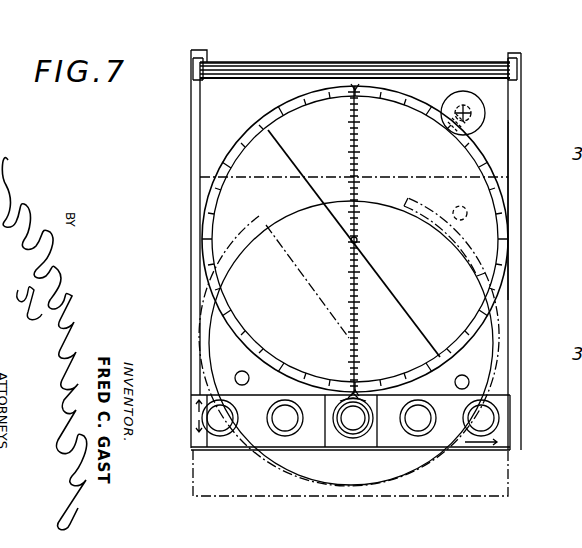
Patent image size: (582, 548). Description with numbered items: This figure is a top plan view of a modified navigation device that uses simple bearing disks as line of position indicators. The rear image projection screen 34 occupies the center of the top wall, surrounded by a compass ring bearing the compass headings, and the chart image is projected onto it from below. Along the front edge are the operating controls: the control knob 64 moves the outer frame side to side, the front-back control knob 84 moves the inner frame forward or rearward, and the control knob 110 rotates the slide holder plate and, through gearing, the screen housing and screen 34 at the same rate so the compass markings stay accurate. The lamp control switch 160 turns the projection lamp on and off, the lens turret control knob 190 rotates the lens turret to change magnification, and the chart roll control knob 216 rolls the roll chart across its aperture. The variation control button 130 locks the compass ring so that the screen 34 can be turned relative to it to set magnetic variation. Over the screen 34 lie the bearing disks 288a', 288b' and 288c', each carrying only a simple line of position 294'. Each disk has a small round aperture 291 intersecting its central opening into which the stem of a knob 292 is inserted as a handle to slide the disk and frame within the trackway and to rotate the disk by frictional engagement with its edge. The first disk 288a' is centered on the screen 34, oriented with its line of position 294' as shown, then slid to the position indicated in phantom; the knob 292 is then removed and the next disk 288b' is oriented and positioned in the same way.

The rear image projection screen 34 is at (260, 203).
The control knob 64 is at (498, 433).
The front-back control knob 84 is at (220, 423).
The control knob 110 is at (357, 437).
The variation control button 130 is at (470, 381).
The lamp control switch 160 is at (288, 428).
The lens turret control knob 190 is at (420, 437).
The chart roll control knob 216 is at (235, 377).
The bearing disk 288a' is at (537, 210).
The bearing disk 288b' is at (267, 49).
The bearing disk 288c' is at (420, 53).
The small round aperture 291 is at (470, 113).
The knob 292 is at (482, 101).
The line of position 294' is at (354, 243).